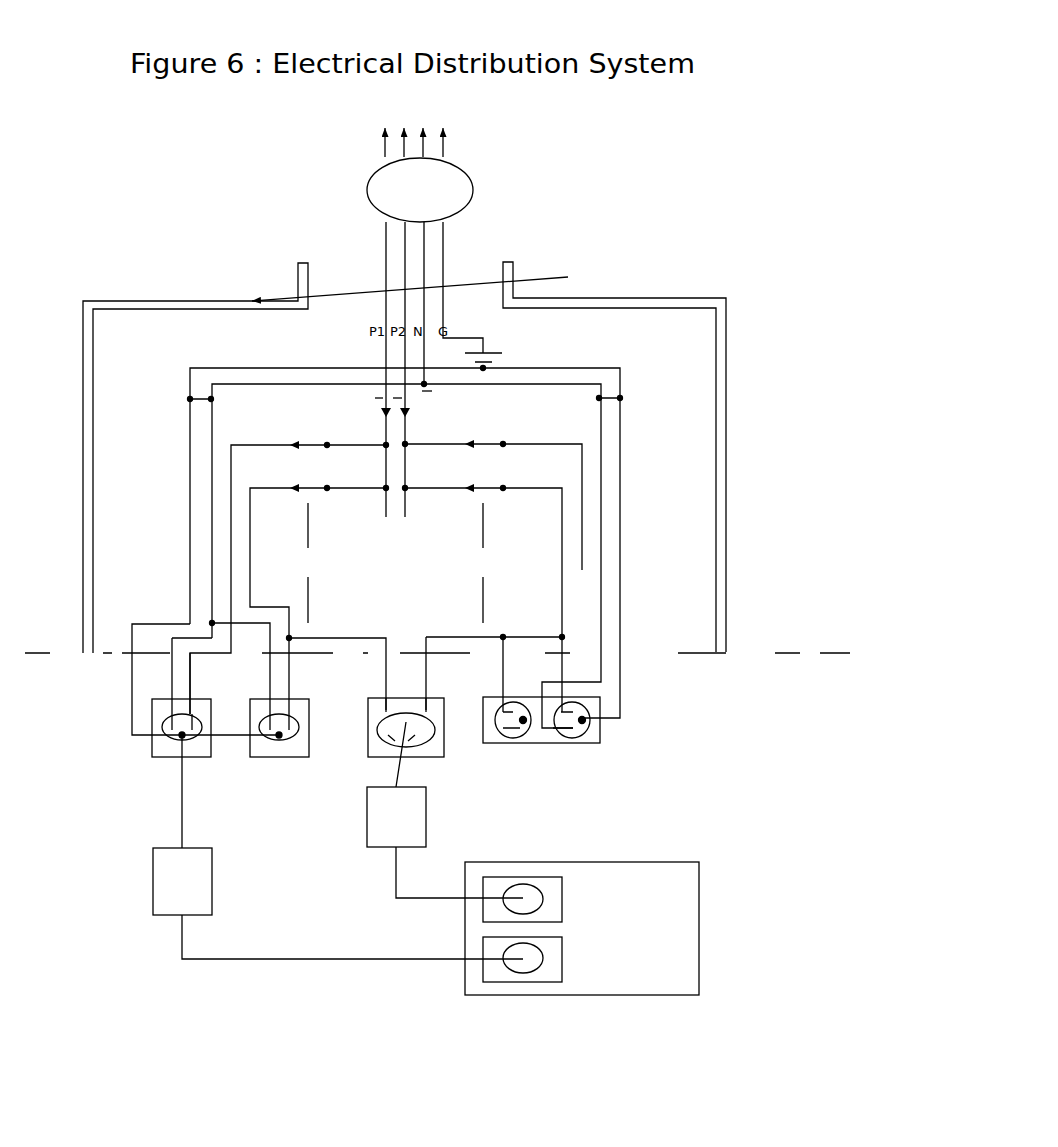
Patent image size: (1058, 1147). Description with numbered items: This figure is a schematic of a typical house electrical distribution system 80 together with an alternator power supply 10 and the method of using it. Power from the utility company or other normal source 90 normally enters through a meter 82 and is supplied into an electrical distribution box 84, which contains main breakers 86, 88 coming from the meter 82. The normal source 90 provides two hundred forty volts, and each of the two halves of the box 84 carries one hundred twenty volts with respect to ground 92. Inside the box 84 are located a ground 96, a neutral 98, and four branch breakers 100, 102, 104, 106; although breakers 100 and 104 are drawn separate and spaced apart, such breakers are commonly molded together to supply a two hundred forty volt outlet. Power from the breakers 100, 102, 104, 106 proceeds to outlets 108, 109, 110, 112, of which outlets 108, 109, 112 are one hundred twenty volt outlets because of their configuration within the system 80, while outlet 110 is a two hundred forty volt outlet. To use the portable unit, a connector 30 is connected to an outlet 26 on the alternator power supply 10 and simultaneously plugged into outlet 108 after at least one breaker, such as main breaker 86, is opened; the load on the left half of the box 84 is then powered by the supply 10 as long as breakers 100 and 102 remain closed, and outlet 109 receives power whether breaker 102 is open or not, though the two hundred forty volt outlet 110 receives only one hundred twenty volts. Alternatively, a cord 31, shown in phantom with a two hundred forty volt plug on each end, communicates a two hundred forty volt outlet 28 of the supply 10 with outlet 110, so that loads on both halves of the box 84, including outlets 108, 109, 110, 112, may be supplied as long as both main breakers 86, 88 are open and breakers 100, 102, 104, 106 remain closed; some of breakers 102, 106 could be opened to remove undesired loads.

The alternator power supply 10 is at (700, 860).
The outlet 26 is at (564, 953).
The 240 volt outlet 28 is at (564, 893).
The connector 30 is at (214, 872).
The connector (cord) 31 is at (428, 812).
The electrical distribution system 80 is at (660, 289).
The meter 82 is at (474, 195).
The electrical distribution box 84 is at (600, 297).
The main breaker 86 is at (411, 408).
The main breaker 88 is at (380, 408).
The normal source 90 is at (414, 132).
The ground 92 is at (486, 347).
The ground 96 is at (600, 366).
The neutral 98 is at (560, 387).
The breaker 100 is at (318, 442).
The breaker 102 is at (318, 486).
The breaker 104 is at (493, 442).
The breaker 106 is at (483, 486).
The outlet 108 is at (150, 752).
The outlet 109 is at (279, 757).
The outlet 110 is at (368, 756).
The outlet 112 is at (562, 745).